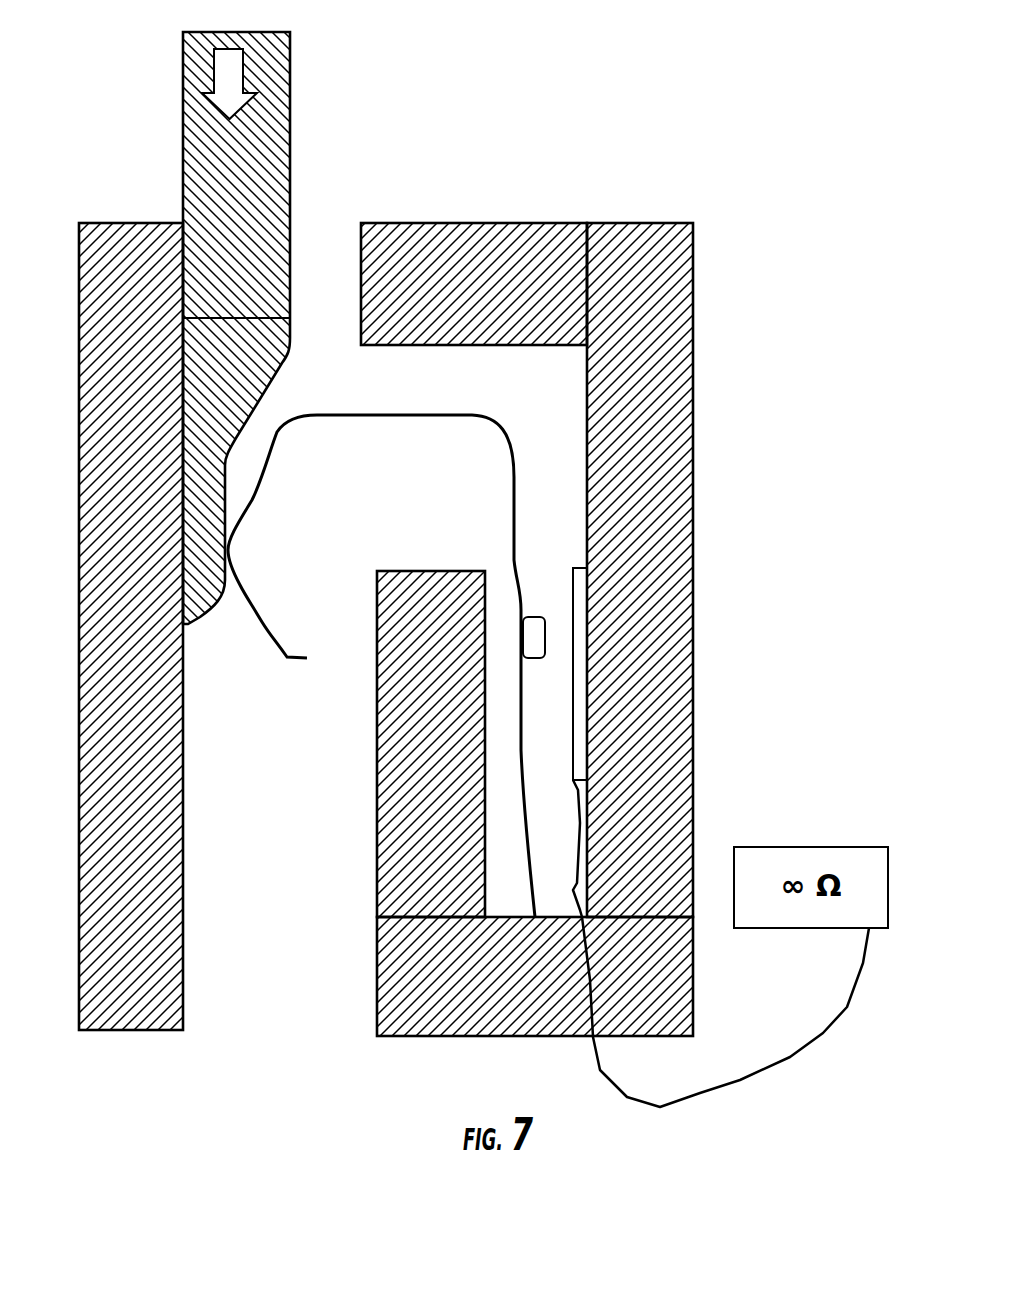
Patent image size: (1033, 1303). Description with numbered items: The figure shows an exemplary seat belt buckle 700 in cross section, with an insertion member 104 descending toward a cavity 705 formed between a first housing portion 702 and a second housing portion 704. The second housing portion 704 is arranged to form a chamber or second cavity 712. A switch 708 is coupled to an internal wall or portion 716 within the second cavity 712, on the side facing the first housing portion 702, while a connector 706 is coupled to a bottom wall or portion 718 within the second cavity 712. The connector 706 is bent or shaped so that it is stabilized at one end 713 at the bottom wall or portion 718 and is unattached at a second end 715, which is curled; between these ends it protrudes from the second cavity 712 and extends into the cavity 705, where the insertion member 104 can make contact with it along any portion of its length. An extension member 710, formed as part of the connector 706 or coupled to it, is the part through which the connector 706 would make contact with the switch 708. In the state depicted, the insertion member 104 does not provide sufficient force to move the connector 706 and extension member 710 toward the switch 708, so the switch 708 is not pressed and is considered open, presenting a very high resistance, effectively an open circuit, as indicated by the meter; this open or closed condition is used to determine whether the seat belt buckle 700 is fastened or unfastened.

The seat belt buckle 700 is at (483, 125).
The first housing portion 702 is at (125, 337).
The insertion member 104 is at (188, 477).
The second housing portion 704 is at (652, 295).
The internal wall or portion 716 is at (588, 410).
The connector 706 is at (522, 479).
The switch 708 is at (597, 735).
The extension member 710 is at (522, 638).
The second cavity 712 is at (551, 812).
The stabilized end 713 is at (537, 854).
The unattached end 715 is at (272, 657).
The cavity 705 is at (280, 921).
The bottom wall or portion 718 is at (494, 915).